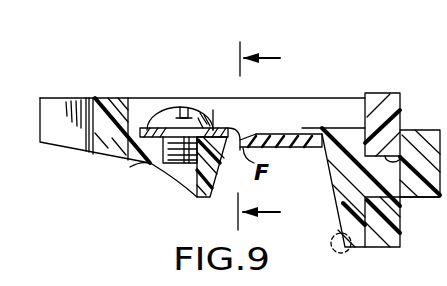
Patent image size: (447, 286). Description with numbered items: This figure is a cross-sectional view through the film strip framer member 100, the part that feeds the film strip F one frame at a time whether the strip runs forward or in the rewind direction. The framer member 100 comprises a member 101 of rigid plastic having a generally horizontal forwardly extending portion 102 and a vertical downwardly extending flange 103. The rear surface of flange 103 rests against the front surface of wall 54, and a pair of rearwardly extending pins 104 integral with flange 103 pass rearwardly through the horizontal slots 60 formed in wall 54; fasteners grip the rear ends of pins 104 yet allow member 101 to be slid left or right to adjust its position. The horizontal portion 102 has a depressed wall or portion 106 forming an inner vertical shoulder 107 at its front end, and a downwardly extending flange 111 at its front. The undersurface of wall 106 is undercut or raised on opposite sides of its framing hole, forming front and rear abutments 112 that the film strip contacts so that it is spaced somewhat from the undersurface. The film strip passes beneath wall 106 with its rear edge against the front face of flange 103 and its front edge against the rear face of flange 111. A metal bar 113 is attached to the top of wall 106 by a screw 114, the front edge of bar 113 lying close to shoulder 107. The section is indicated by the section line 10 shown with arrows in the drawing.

The film strip framer member 100 is at (150, 44).
The member 101 is at (127, 98).
The horizontal forwardly extending portion 102 is at (144, 166).
The vertical downwardly extending flange 103 is at (349, 259).
The rearwardly extending pins 104 is at (414, 197).
The depressed wall or portion 106 is at (302, 128).
The inner vertical shoulder 107 is at (140, 98).
The downwardly extending flange 111 is at (197, 190).
The front and rear abutments 112 is at (308, 134).
The metal bar 113 is at (229, 97).
The screw 114 is at (191, 100).
The wall 54 is at (400, 113).
The horizontal slots 60 is at (408, 153).
The section line 10- 10 is at (274, 137).